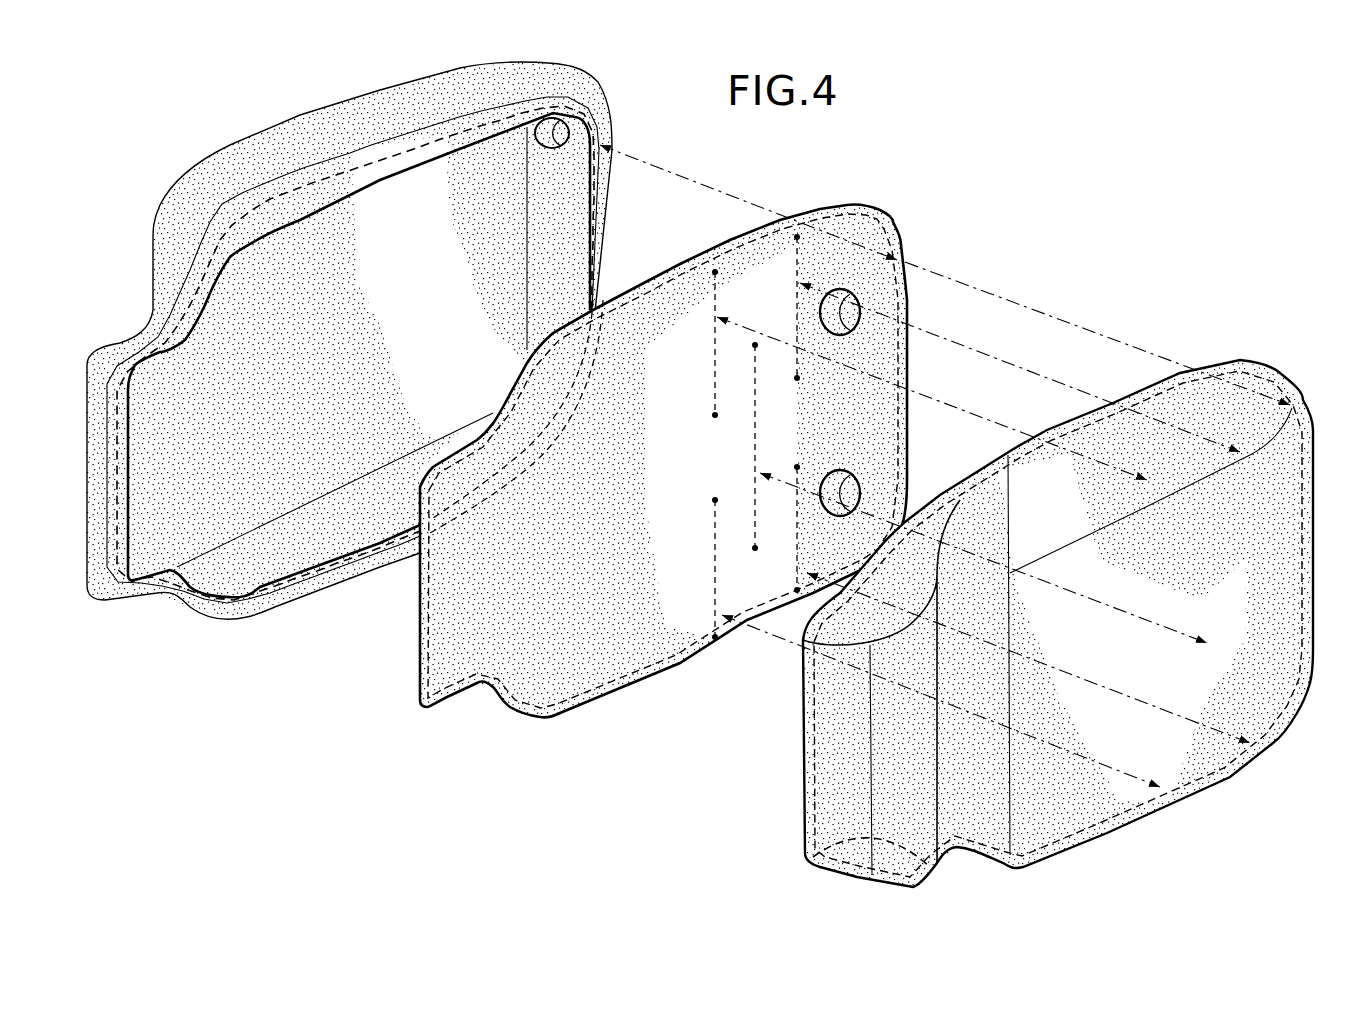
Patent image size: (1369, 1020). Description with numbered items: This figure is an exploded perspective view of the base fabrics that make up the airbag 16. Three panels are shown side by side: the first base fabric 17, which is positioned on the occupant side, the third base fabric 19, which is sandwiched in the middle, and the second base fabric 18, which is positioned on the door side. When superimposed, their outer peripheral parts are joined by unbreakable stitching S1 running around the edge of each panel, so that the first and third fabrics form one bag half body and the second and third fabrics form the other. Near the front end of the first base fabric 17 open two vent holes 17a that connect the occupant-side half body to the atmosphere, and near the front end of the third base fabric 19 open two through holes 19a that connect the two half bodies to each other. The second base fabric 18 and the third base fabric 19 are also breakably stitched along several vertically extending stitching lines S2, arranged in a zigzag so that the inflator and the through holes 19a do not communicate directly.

The airbag 16 is at (1092, 230).
The first base fabric 17 is at (245, 138).
The vent hole 17a is at (558, 128).
The second base fabric 18 is at (1262, 358).
The third base fabric 19 is at (878, 208).
The through hole 19a is at (857, 296).
The unbreakable stitching S1 is at (205, 305).
The stitching line S2 is at (793, 292).